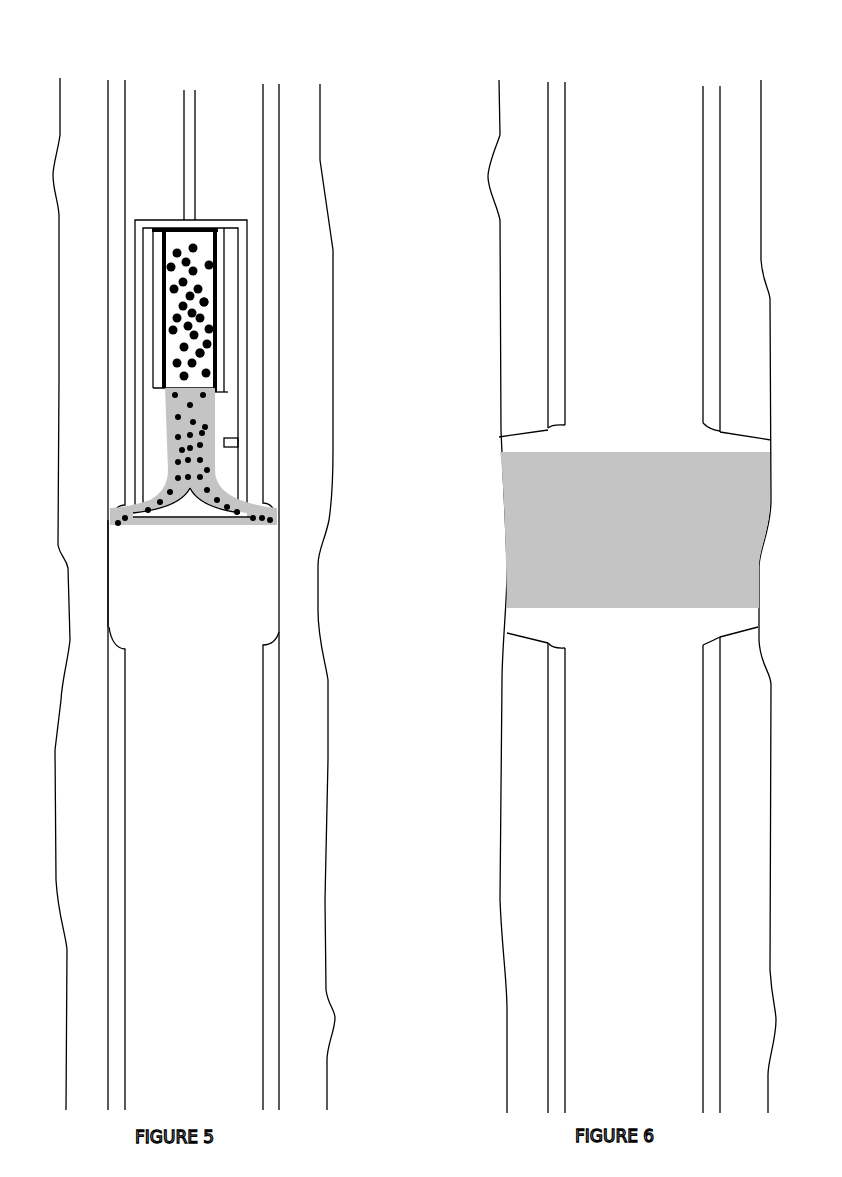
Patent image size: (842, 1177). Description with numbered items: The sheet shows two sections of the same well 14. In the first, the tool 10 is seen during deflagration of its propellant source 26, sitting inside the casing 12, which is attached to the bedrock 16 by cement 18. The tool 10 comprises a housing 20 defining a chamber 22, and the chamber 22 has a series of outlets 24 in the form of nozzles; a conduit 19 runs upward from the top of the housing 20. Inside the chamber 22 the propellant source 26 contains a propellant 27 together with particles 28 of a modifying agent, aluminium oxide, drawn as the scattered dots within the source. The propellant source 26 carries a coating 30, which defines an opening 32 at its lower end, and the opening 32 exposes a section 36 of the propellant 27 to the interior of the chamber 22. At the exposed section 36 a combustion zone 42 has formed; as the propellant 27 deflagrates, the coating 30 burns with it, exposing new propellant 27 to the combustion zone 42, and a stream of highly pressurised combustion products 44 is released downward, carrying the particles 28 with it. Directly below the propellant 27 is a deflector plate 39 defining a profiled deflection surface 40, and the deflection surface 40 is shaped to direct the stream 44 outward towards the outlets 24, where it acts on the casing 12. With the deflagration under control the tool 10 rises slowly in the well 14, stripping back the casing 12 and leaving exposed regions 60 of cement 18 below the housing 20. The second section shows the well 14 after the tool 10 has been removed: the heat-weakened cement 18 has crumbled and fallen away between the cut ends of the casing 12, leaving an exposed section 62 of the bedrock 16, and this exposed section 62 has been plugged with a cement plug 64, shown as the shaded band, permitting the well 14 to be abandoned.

In FIG. 5, the tool 10 is at (223, 177).
In FIG. 5, the casing 12 is at (270, 727).
In FIG. 6, the casing 12 is at (555, 740).
In FIG. 5, the well 14 is at (228, 812).
In FIG. 6, the well 14 is at (578, 812).
In FIG. 5, the bedrock 16 is at (342, 823).
In FIG. 6, the bedrock 16 is at (433, 812).
In FIG. 5, the cement 18 is at (307, 880).
In FIG. 6, the cement 18 is at (515, 885).
In FIG. 5, the conduit 19 is at (193, 92).
In FIG. 5, the housing 20 is at (238, 282).
In FIG. 5, the chamber 22 is at (235, 367).
In FIG. 5, the outlets 24 is at (205, 507).
In FIG. 5, the propellant source 26 is at (210, 308).
In FIG. 5, the propellant 27 is at (210, 317).
In FIG. 5, the particles of modifying agent 28 is at (207, 333).
In FIG. 5, the coating 30 is at (220, 260).
In FIG. 5, the opening 32 is at (228, 392).
In FIG. 5, the exposed propellant section 36 is at (210, 398).
In FIG. 5, the deflector plate 39 is at (195, 500).
In FIG. 5, the deflection surface 40 is at (175, 502).
In FIG. 5, the combustion zone 42 is at (166, 388).
In FIG. 5, the stream of combustion products 44 is at (116, 516).
In FIG. 5, the exposed regions of cement 60 is at (117, 600).
In FIG. 6, the exposed section of bedrock 62 is at (492, 506).
In FIG. 6, the cement plug 64 is at (538, 527).